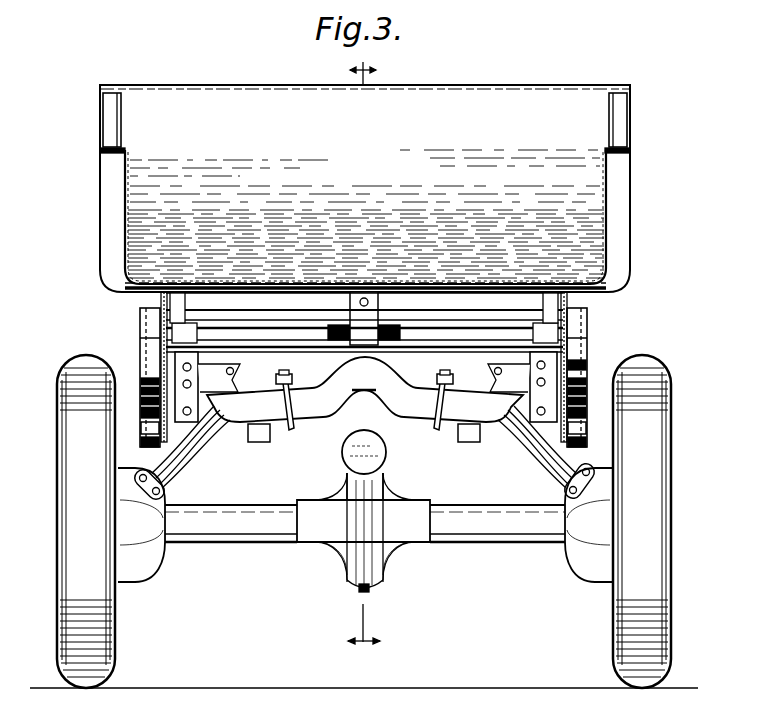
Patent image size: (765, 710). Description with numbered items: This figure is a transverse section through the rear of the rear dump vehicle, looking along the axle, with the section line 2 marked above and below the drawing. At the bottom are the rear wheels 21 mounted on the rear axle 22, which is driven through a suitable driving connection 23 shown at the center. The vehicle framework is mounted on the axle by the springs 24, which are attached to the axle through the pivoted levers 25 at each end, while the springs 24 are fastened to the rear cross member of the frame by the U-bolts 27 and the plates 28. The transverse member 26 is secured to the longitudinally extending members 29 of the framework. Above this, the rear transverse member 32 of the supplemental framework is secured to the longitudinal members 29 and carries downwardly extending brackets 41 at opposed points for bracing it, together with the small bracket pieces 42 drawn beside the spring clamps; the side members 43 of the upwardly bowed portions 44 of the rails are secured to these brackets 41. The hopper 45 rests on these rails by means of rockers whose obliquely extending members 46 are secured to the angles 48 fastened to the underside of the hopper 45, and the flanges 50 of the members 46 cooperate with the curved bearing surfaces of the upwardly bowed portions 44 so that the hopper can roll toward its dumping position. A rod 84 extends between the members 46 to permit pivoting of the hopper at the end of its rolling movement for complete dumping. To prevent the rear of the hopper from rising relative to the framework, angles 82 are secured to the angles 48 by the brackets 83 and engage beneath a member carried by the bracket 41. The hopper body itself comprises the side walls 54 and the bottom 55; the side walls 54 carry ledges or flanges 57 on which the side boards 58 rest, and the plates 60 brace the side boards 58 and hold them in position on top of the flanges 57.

The section line 2 is at (364, 357).
The rear wheels 21 is at (60, 530).
The rear axle 22 is at (478, 511).
The driving connection 23 is at (385, 455).
The springs 24 is at (238, 437).
The pivoted levers 25 is at (168, 488).
The transverse member 26 is at (312, 402).
The U-bolts 27 is at (292, 426).
The plates 28 is at (293, 384).
The longitudinally extending members 29 is at (259, 444).
The rear transverse member 32 is at (421, 367).
The brackets 41 is at (182, 368).
The bracket 42 is at (236, 375).
The side members 43 is at (583, 392).
The upwardly bowed portions 44 is at (150, 430).
The hopper 45 is at (415, 95).
The obliquely extending members 46 is at (150, 320).
The angles 48 is at (162, 300).
The flanges 50 is at (585, 366).
The side walls 54 is at (123, 191).
The bottom 55 is at (362, 290).
The ledges or flanges 57 is at (102, 157).
The side boards 58 is at (109, 117).
The plates 60 is at (100, 135).
The angles 82 is at (165, 337).
The brackets 83 is at (183, 297).
The rod 84 is at (267, 345).